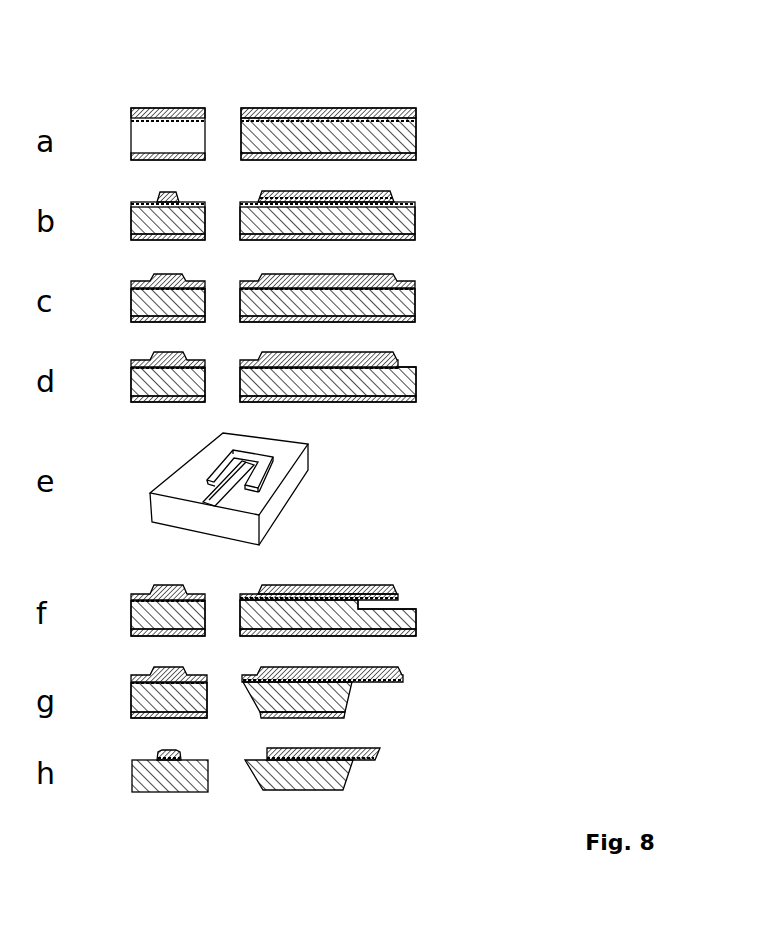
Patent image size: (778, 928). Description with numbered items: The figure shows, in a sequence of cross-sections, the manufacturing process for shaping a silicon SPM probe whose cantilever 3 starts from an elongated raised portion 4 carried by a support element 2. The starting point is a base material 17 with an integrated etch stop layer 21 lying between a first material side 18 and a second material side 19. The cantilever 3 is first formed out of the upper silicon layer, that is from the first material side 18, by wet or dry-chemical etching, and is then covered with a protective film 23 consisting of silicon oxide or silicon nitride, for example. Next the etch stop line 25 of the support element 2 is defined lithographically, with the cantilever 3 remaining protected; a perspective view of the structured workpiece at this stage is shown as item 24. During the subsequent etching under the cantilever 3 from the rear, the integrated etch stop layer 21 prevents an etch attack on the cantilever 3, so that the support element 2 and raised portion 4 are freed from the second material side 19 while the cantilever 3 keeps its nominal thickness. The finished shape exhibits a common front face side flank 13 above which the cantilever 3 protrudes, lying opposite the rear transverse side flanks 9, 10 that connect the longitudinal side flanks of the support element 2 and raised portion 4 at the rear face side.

The support element 2 is at (287, 809).
The cantilever 3 is at (157, 203).
The raised portion 4 is at (257, 782).
The rear transverse side flank 9 is at (287, 809).
The rear transverse side flank 10 is at (287, 809).
The front face side flank 13 is at (357, 695).
The base material 17 is at (407, 135).
The first material side 18 is at (353, 110).
The second material side 19 is at (395, 162).
The etch stop layer 21 is at (400, 110).
The protective film 23 is at (385, 277).
The structured substrate 24 is at (270, 455).
The etch stop line 25 is at (362, 605).